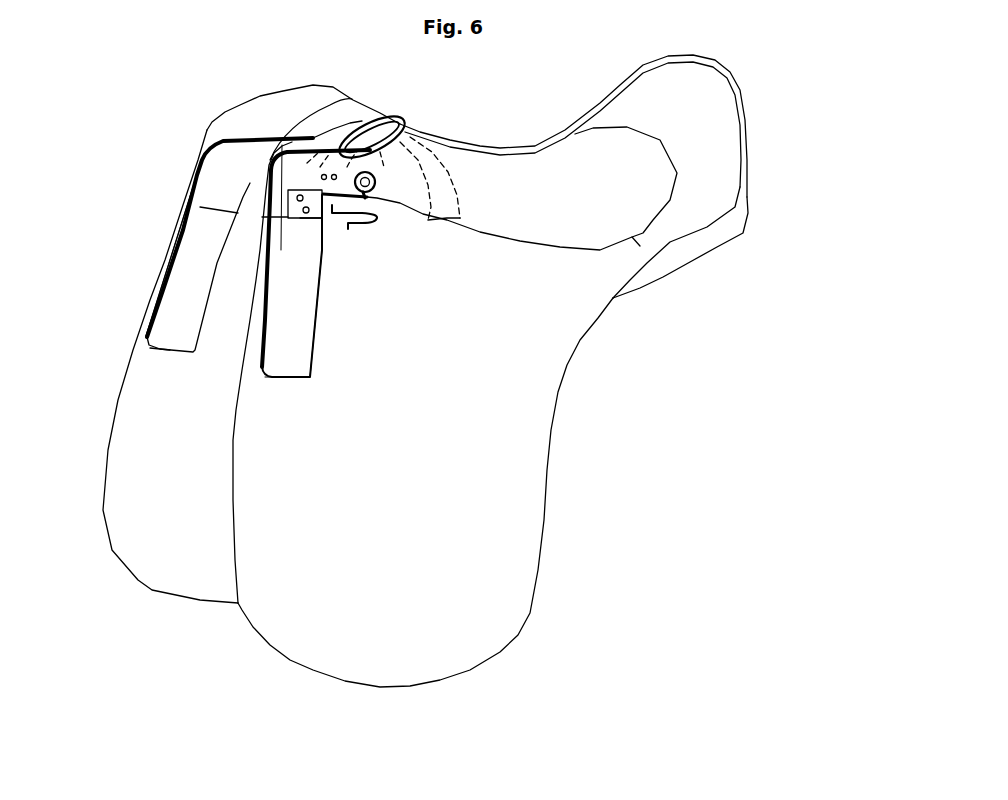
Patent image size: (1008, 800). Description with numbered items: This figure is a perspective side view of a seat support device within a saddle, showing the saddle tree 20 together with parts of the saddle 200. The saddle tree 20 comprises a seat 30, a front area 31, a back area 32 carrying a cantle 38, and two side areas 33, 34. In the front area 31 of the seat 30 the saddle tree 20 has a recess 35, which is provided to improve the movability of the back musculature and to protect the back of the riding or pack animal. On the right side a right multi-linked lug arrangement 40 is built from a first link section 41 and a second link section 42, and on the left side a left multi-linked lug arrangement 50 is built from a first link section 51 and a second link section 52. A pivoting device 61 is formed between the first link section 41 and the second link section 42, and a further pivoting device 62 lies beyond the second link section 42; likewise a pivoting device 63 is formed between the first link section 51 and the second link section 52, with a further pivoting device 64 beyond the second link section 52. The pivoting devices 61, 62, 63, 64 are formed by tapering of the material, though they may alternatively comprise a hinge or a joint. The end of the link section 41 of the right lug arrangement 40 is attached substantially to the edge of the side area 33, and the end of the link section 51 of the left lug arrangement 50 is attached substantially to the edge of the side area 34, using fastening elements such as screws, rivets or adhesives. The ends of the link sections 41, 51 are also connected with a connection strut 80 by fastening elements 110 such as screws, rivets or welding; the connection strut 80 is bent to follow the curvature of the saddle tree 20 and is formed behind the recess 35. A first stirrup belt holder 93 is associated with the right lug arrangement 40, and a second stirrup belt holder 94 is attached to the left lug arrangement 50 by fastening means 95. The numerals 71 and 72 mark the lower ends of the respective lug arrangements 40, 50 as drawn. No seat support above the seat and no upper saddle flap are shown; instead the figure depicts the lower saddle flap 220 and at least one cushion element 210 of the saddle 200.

The saddle tree 20 is at (226, 82).
The seat 30 is at (530, 201).
The front area 31 is at (448, 139).
The back area 32 is at (617, 168).
The side area 33 is at (510, 148).
The side area 34 is at (512, 249).
The recess 35 is at (392, 124).
The cantle 38 is at (672, 112).
The right multi-linked lug arrangement 40 is at (108, 203).
The first link section 41 is at (237, 140).
The second link section 42 is at (162, 292).
The left multi-linked lug arrangement 50 is at (365, 282).
The first link section 51 is at (270, 187).
The second link section 52 is at (310, 353).
The pivoting device 61 is at (328, 128).
The pivoting device 62 is at (197, 207).
The pivoting device 63 is at (387, 160).
The pivoting device 64 is at (283, 238).
The front billet end 71 is at (170, 345).
The rear billet end 72 is at (282, 372).
The connection strut 80 is at (452, 179).
The first stirrup belt holder 93 is at (190, 170).
The second stirrup belt holder 94 is at (350, 225).
The fastening means 95 is at (298, 190).
The fastening elements 110 is at (430, 217).
The saddle 200 is at (722, 423).
The cushion element 210 is at (720, 247).
The lower saddle flap 220 is at (153, 588).